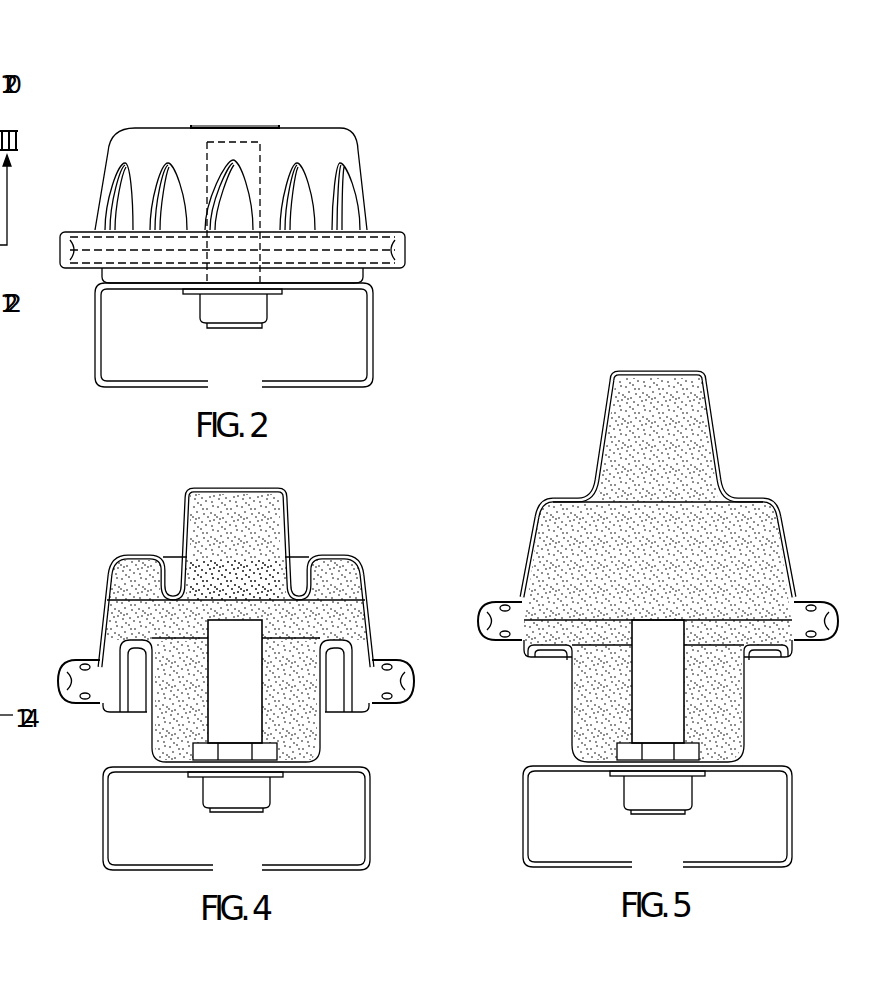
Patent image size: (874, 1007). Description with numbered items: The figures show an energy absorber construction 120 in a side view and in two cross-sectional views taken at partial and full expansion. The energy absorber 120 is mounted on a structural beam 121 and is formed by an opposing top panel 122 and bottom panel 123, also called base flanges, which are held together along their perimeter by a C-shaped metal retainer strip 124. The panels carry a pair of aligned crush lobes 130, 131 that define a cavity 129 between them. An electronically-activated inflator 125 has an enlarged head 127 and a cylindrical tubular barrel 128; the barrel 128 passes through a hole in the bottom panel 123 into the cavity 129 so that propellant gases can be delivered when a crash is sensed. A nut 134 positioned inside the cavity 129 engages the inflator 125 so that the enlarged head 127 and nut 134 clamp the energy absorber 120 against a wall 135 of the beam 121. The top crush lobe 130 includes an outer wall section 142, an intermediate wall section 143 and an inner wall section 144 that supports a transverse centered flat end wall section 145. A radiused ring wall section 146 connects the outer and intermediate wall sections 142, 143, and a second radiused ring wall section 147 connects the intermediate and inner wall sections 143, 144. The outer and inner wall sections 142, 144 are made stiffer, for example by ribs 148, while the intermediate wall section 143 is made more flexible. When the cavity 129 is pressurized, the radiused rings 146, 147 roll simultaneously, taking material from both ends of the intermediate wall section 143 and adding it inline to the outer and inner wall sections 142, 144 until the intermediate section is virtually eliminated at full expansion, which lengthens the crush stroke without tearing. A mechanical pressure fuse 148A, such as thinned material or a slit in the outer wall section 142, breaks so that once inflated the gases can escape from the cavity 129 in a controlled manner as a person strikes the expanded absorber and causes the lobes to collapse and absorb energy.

In FIG. 2, the energy absorber construction 120 is at (378, 115).
In FIG. 4, the energy absorber construction 120 is at (115, 522).
In FIG. 5, the energy absorber construction 120 is at (545, 453).
In FIG. 2, the beam 121 is at (377, 330).
In FIG. 4, the beam 121 is at (370, 823).
In FIG. 5, the beam 121 is at (790, 822).
In FIG. 2, the top panel 122 is at (353, 138).
In FIG. 2, the bottom panel 123 is at (397, 253).
In FIG. 4, the bottom panel 123 is at (150, 720).
In FIG. 5, the bottom panel 123 is at (570, 705).
In FIG. 2, the retainer strip 124 is at (405, 233).
In FIG. 4, the retainer strip 124 is at (57, 677).
In FIG. 5, the retainer strip 124 is at (477, 620).
In FIG. 2, the inflator 125 is at (198, 305).
In FIG. 4, the inflator 125 is at (200, 790).
In FIG. 5, the inflator 125 is at (625, 788).
In FIG. 2, the enlarged head 127 is at (270, 307).
In FIG. 4, the enlarged head 127 is at (250, 797).
In FIG. 5, the enlarged head 127 is at (677, 797).
In FIG. 4, the barrel 128 is at (249, 680).
In FIG. 5, the barrel 128 is at (673, 680).
In FIG. 4, the cavity 129 is at (290, 663).
In FIG. 5, the cavity 129 is at (710, 660).
In FIG. 2, the top crush lobe 130 is at (298, 128).
In FIG. 4, the top crush lobe 130 is at (245, 490).
In FIG. 5, the top crush lobe 130 is at (667, 371).
In FIG. 4, the bottom crush lobe 131 is at (323, 750).
In FIG. 5, the bottom crush lobe 131 is at (743, 737).
In FIG. 4, the nut 134 is at (283, 752).
In FIG. 5, the nut 134 is at (707, 750).
In FIG. 4, the wall 135 is at (133, 762).
In FIG. 5, the wall 135 is at (550, 760).
In FIG. 2, the outer wall section 142 is at (138, 143).
In FIG. 4, the outer wall section 142 is at (102, 640).
In FIG. 5, the outer wall section 142 is at (523, 577).
In FIG. 4, the intermediate wall section 143 is at (165, 575).
In FIG. 5, the intermediate wall section 143 is at (747, 502).
In FIG. 4, the inner wall section 144 is at (180, 527).
In FIG. 5, the inner wall section 144 is at (602, 408).
In FIG. 2, the end wall section 145 is at (233, 123).
In FIG. 2, the radiused ring wall section 146 is at (115, 140).
In FIG. 4, the radiused ring wall section 146 is at (130, 560).
In FIG. 5, the radiused ring wall section 146 is at (552, 500).
In FIG. 4, the radiused ring wall section 147 is at (300, 587).
In FIG. 5, the radiused ring wall section 147 is at (578, 495).
In FIG. 2, the ribs 148 is at (168, 213).
In FIG. 2, the mechanical pressure fuse 148A is at (168, 148).